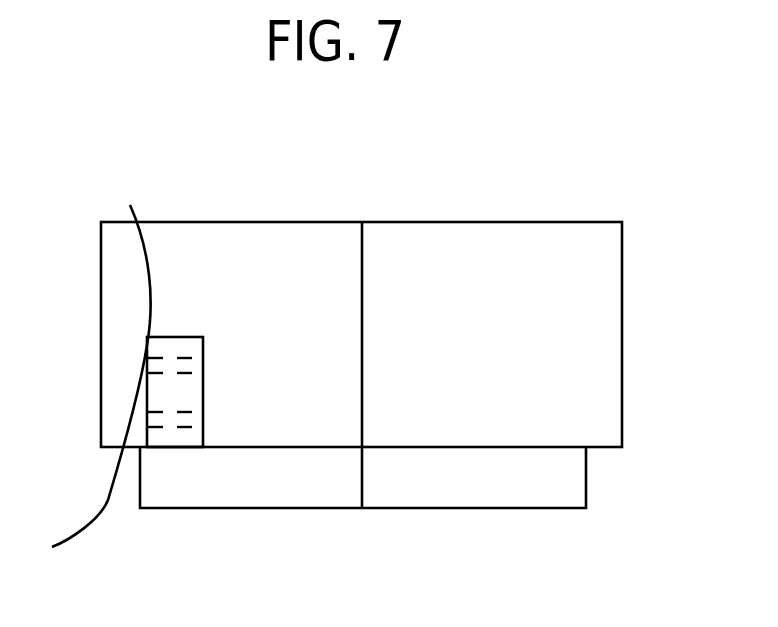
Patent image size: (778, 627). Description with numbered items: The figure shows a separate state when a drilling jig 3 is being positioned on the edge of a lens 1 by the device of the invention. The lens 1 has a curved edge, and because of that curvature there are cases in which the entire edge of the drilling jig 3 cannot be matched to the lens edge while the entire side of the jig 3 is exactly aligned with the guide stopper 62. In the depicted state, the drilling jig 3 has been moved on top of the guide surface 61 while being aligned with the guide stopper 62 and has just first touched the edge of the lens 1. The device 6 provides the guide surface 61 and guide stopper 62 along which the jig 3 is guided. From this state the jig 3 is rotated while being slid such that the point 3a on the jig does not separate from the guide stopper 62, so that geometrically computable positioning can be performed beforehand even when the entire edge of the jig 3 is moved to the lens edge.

The lens 1 is at (107, 510).
The drilling jig 3 is at (203, 388).
The point 3a is at (205, 447).
The housing 6 is at (634, 293).
The guide surface 61 is at (257, 242).
The guide stopper 62 is at (258, 490).